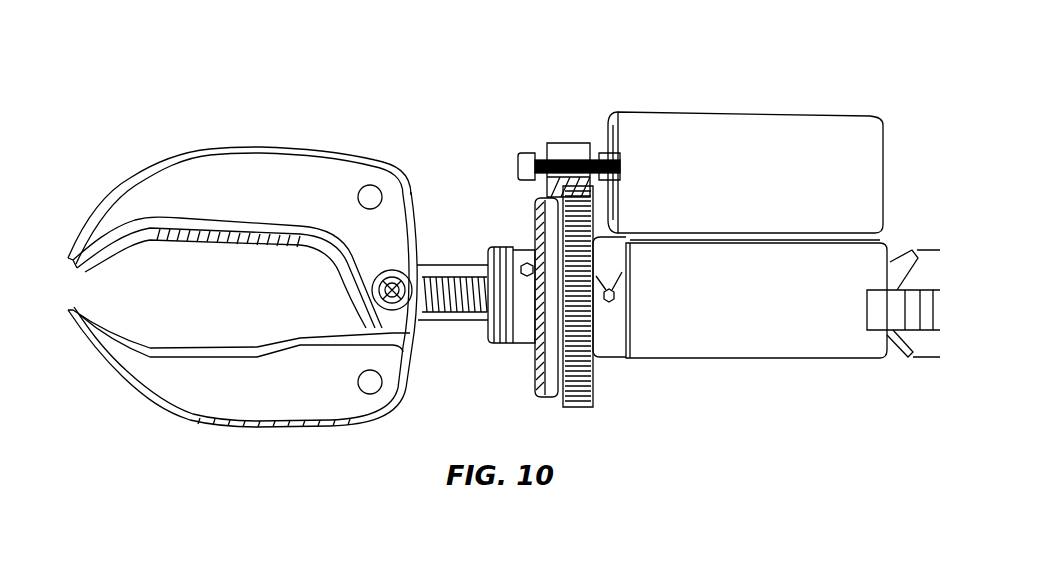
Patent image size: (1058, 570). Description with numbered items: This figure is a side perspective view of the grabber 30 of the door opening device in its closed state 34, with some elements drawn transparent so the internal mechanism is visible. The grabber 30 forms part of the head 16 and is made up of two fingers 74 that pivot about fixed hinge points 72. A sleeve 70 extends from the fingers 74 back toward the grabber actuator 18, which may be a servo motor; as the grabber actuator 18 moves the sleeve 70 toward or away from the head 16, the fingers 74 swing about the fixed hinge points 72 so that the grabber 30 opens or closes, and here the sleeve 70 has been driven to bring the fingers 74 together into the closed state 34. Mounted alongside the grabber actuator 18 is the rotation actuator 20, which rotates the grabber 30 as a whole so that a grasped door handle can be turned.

The head 16 is at (365, 173).
The grabber actuator 18 is at (727, 332).
The rotation actuator 20 is at (727, 150).
The grabber 30 is at (253, 180).
The closed state 34 is at (137, 403).
The sleeve 70 is at (442, 266).
The fixed hinge points 72 is at (380, 182).
The fingers 74 is at (198, 148).